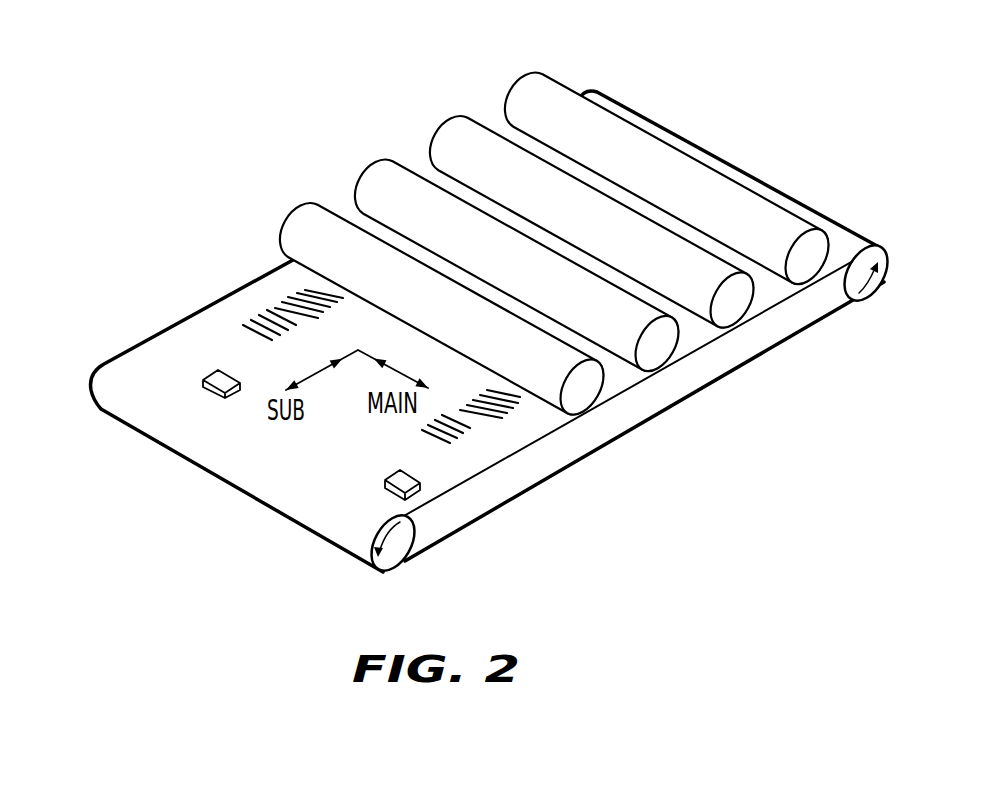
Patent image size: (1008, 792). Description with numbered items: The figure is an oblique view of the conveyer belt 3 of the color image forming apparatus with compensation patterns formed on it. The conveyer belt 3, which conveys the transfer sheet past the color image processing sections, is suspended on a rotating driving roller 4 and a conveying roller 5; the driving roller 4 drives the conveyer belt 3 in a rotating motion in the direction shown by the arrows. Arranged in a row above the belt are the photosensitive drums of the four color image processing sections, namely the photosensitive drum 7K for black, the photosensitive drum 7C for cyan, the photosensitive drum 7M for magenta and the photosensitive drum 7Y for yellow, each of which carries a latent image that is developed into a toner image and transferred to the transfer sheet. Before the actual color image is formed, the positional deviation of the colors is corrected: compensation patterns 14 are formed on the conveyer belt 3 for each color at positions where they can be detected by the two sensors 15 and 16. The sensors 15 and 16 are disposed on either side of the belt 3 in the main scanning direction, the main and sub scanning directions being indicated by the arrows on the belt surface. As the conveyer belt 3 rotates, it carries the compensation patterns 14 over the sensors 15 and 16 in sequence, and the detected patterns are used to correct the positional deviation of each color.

The conveyer belt 3 is at (508, 480).
The driving roller 4 is at (855, 288).
The conveying roller 5 is at (402, 538).
The photosensitive drum 7K is at (308, 226).
The photosensitive drum 7C is at (383, 183).
The photosensitive drum 7M is at (458, 138).
The photosensitive drum 7Y is at (533, 97).
The compensation patterns 14 is at (258, 322).
The sensor 15 is at (203, 395).
The sensor 16 is at (385, 494).